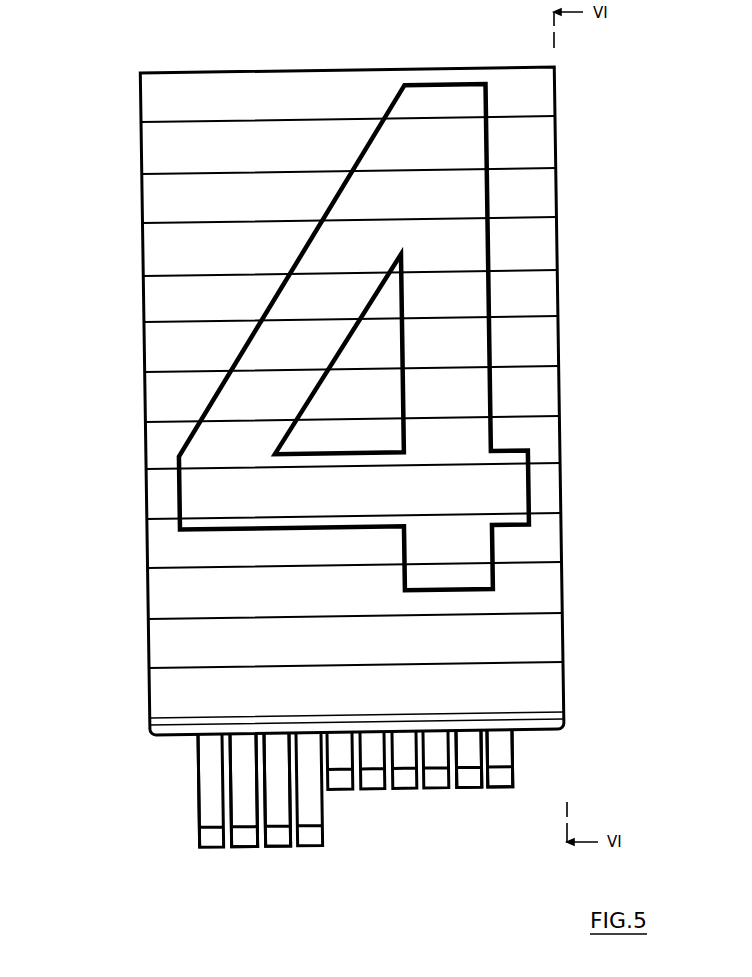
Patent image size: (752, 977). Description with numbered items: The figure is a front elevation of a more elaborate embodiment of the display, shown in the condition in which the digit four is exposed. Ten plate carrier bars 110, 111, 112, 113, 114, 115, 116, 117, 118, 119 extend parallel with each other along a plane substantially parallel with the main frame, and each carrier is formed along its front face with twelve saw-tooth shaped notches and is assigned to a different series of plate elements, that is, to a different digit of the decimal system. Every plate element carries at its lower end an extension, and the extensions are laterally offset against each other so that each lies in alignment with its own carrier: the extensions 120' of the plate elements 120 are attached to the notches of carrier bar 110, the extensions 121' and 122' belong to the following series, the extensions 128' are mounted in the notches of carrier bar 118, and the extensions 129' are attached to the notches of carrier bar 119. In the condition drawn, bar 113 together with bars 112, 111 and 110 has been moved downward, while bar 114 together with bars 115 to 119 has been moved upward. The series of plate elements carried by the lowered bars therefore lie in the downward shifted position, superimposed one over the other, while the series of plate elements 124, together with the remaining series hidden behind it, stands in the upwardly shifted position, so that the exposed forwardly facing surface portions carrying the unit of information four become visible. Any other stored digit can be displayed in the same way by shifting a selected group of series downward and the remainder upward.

The plate carrier 110 is at (211, 840).
The plate carrier 111 is at (242, 838).
The plate carrier 112 is at (276, 838).
The plate carrier 113 is at (309, 838).
The plate carrier 114 is at (341, 782).
The plate carrier 115 is at (373, 782).
The plate carrier 116 is at (405, 782).
The plate carrier 117 is at (436, 782).
The plate carrier 118 is at (469, 782).
The plate carrier 119 is at (500, 782).
The plate elements of the first series 120 is at (321, 401).
The extension 120' is at (171, 790).
The extension 121' is at (200, 789).
The extension 122' is at (217, 789).
The plate elements 124 is at (163, 103).
The extension 128' is at (509, 758).
The extension 129' is at (524, 758).